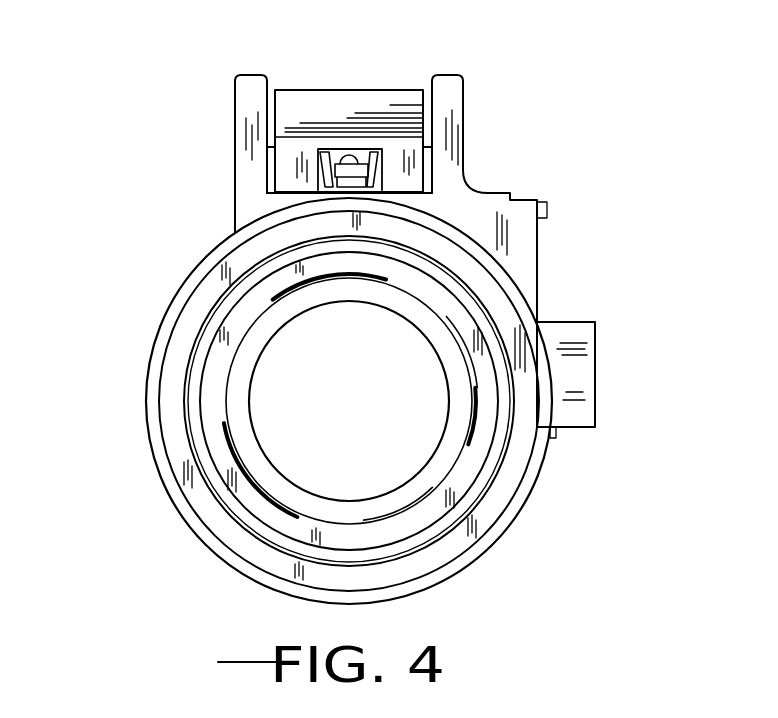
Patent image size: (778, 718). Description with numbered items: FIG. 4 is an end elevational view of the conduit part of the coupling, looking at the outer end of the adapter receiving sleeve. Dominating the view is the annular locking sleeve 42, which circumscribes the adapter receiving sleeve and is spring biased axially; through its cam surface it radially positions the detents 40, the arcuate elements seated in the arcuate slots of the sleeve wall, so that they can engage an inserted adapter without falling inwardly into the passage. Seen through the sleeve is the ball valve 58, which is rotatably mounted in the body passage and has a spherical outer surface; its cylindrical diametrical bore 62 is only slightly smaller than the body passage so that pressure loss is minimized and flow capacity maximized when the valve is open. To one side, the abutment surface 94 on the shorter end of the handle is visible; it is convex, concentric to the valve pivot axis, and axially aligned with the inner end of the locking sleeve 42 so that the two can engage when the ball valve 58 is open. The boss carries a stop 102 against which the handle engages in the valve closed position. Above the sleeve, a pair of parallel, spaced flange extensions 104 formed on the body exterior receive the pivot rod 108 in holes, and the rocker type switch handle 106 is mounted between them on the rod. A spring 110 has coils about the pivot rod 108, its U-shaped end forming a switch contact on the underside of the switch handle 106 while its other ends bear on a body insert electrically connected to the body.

The detents 40 is at (460, 440).
The locking sleeve 42 is at (168, 405).
The ball valve 58 is at (335, 289).
The bore 62 is at (420, 335).
The abutment surface 94 is at (578, 370).
The stop 102 is at (547, 208).
The flange extensions 104 is at (247, 88).
The switch handle 106 is at (367, 103).
The pivot rod 108 is at (340, 157).
The spring 110 is at (383, 172).